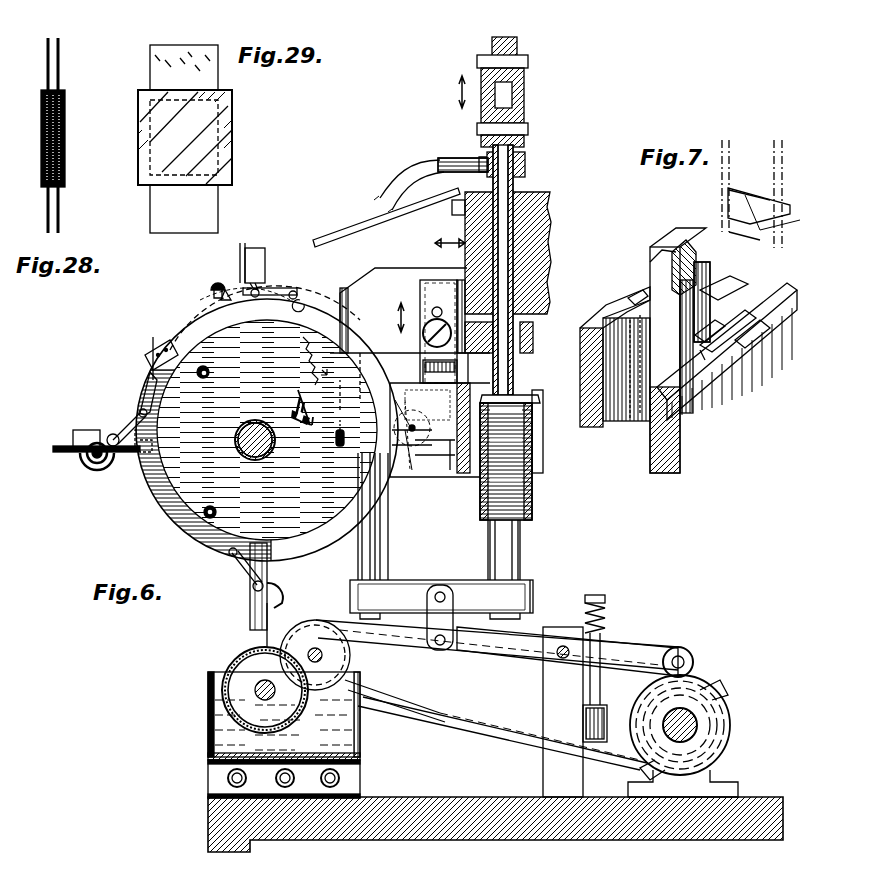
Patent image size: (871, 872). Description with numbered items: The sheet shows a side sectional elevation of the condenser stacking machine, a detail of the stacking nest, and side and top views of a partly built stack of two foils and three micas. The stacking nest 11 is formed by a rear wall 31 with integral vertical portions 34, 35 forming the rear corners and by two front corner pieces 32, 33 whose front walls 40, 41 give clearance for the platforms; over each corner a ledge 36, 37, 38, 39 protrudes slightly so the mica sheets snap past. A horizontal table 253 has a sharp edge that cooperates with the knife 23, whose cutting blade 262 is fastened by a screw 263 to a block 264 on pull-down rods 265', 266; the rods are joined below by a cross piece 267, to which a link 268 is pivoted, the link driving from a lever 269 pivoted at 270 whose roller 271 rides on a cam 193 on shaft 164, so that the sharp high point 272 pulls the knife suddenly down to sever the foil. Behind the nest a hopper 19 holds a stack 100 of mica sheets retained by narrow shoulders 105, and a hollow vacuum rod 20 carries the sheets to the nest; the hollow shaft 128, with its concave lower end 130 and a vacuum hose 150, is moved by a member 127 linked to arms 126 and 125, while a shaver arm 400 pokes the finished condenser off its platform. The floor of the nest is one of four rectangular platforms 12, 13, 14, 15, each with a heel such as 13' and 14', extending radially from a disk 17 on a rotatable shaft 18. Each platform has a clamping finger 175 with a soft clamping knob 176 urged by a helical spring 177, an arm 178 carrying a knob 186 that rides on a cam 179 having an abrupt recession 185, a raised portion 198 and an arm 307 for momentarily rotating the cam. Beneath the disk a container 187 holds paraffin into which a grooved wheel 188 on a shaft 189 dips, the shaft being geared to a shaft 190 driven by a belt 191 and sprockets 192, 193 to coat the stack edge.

In FIG. 6, the arm 125 is at (518, 42).
In FIG. 6, the arm 126 is at (524, 82).
In FIG. 6, the member 127 is at (522, 145).
In FIG. 6, the vacuum hose 150 is at (420, 162).
In FIG. 6, the hollow vacuum rod 20 is at (531, 182).
In FIG. 6, the concave lower end 130 is at (512, 368).
In FIG. 6, the hollow shaft 128 is at (465, 224).
In FIG. 6, the shaver arm 400 is at (338, 222).
In FIG. 6, the block 264 is at (358, 284).
In FIG. 7, the knife 23 is at (720, 180).
In FIG. 6, the knife 23 is at (420, 291).
In FIG. 6, the screw 263 is at (439, 316).
In FIG. 6, the cutting blade 262 is at (459, 331).
In FIG. 7, the front corner piece 32 is at (688, 220).
In FIG. 6, the front corner piece 32 is at (404, 326).
In FIG. 6, the stacking nest 11 is at (424, 378).
In FIG. 7, the ledge 37 is at (708, 289).
In FIG. 6, the ledge 37 is at (462, 380).
In FIG. 6, the narrow shoulders 105 is at (535, 397).
In FIG. 7, the rear wall 31 is at (760, 320).
In FIG. 6, the rear wall 31 is at (532, 420).
In FIG. 6, the stack of mica sheets 100 is at (532, 457).
In FIG. 6, the hopper 19 is at (532, 499).
In FIG. 6, the pull-down rod 266 is at (520, 542).
In FIG. 6, the cross piece 267 is at (533, 591).
In FIG. 6, the link 268 is at (448, 652).
In FIG. 6, the column 265' is at (404, 516).
In FIG. 6, the knob 186 is at (365, 494).
In FIG. 7, the front wall 41 is at (648, 345).
In FIG. 6, the front wall 41 is at (414, 470).
In FIG. 6, the rectangular platform 12 is at (450, 468).
In FIG. 6, the disk 17 is at (147, 517).
In FIG. 6, the rotatable shaft 18 is at (248, 458).
In FIG. 6, the abrupt recession 185 is at (354, 466).
In FIG. 6, the rectangular platform 13 is at (263, 251).
In FIG. 6, the heel 13' is at (213, 275).
In FIG. 6, the helical spring 177 is at (252, 288).
In FIG. 6, the arm 178 is at (279, 284).
In FIG. 6, the clamping knob 176 is at (214, 282).
In FIG. 6, the finger 175 is at (221, 295).
In FIG. 6, the cam 179 is at (155, 334).
In FIG. 6, the raised portion 198 is at (147, 369).
In FIG. 6, the arm 307 is at (141, 399).
In FIG. 6, the rectangular platform 14 is at (102, 428).
In FIG. 6, the heel 14' is at (95, 469).
In FIG. 6, the rectangular platform 15 is at (250, 630).
In FIG. 6, the sprocket 192 is at (314, 622).
In FIG. 6, the shaft 190 is at (324, 655).
In FIG. 6, the shaft 189 is at (250, 692).
In FIG. 6, the grooved wheel 188 is at (230, 713).
In FIG. 6, the container 187 is at (361, 707).
In FIG. 6, the belt 191 is at (440, 722).
In FIG. 6, the lever 269 is at (652, 645).
In FIG. 6, the pivot 270 is at (569, 650).
In FIG. 6, the roller 271 is at (691, 650).
In FIG. 6, the shaft 164 is at (695, 707).
In FIG. 6, the cam 193 is at (728, 736).
In FIG. 6, the sharp high point 272 is at (728, 678).
In FIG. 7, the ledge 36 is at (672, 242).
In FIG. 7, the front wall 40 is at (665, 260).
In FIG. 7, the front corner piece 33 is at (604, 295).
In FIG. 7, the ledge 39 is at (646, 281).
In FIG. 7, the horizontal table 253 is at (790, 248).
In FIG. 7, the vertical portion 34 is at (716, 279).
In FIG. 7, the ledge 38 is at (770, 308).
In FIG. 7, the vertical portion 35 is at (706, 362).